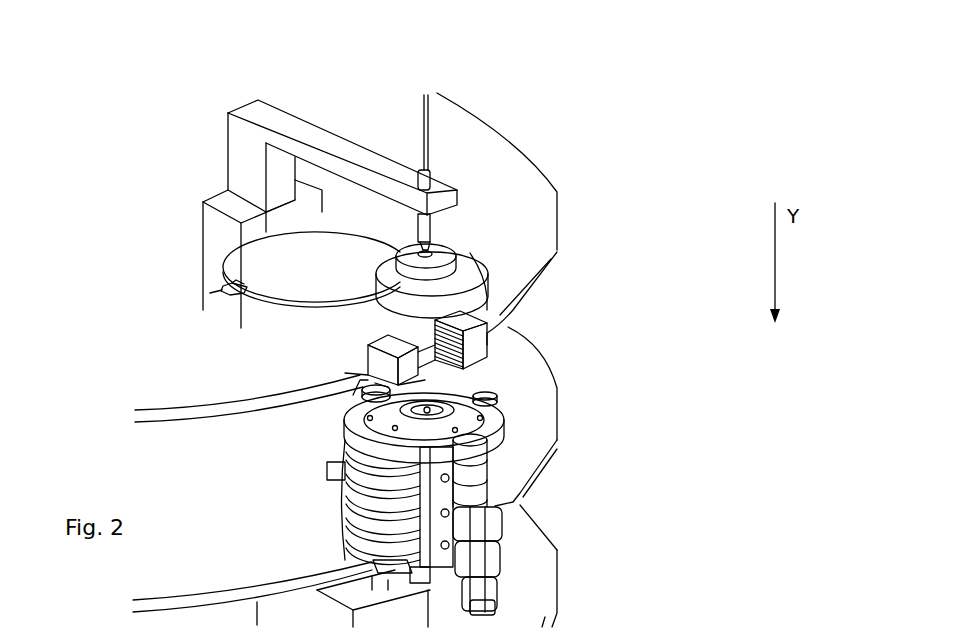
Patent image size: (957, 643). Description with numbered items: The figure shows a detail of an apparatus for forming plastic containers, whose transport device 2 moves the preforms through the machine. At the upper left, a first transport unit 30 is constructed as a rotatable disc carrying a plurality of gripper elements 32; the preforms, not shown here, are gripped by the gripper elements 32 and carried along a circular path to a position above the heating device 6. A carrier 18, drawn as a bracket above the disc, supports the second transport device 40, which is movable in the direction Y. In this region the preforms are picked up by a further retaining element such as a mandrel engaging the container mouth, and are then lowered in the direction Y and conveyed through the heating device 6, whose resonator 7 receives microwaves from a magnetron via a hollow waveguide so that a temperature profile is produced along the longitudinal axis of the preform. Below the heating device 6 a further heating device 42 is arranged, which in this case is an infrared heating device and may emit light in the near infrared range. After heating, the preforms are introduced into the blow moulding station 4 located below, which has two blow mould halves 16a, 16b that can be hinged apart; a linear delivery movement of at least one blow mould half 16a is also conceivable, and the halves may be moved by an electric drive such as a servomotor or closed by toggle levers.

The transport device 2 is at (470, 168).
The blow moulding station 4 is at (540, 478).
The heating device 6 is at (482, 245).
The resonator 7 is at (462, 303).
The blow mould half 16a is at (343, 498).
The blow mould half 16b is at (495, 407).
The carrier 18 is at (343, 162).
The first transport unit 30 is at (253, 259).
The gripper elements 32 is at (230, 288).
The second transport device 40 is at (428, 117).
The further heating device 42 is at (478, 348).